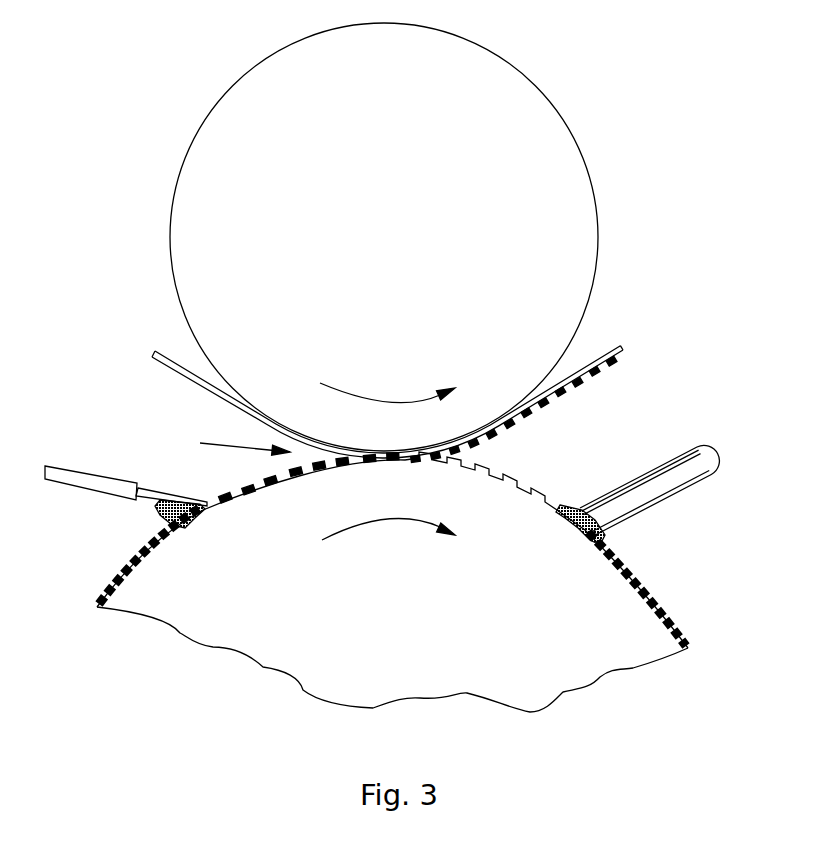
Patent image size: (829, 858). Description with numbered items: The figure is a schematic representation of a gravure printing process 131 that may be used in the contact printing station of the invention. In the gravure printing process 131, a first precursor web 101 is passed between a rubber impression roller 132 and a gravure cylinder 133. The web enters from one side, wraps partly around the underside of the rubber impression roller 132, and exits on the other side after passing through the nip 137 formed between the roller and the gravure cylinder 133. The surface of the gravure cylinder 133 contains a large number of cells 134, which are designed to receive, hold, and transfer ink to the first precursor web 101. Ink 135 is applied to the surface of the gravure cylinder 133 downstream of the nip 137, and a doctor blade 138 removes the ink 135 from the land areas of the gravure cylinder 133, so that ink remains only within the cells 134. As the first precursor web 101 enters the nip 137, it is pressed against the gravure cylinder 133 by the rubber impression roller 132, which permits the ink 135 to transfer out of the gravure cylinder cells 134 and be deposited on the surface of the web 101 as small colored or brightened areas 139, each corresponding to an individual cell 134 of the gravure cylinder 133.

The first precursor web 101 is at (190, 380).
The gravure printing process 131 is at (667, 244).
The rubber impression roller 132 is at (410, 283).
The gravure cylinder 133 is at (395, 601).
The cells 134 is at (502, 480).
The ink 135 is at (569, 510).
The nip 137 is at (224, 438).
The doctor blade 138 is at (165, 493).
The colored or brightened areas 139 is at (622, 362).